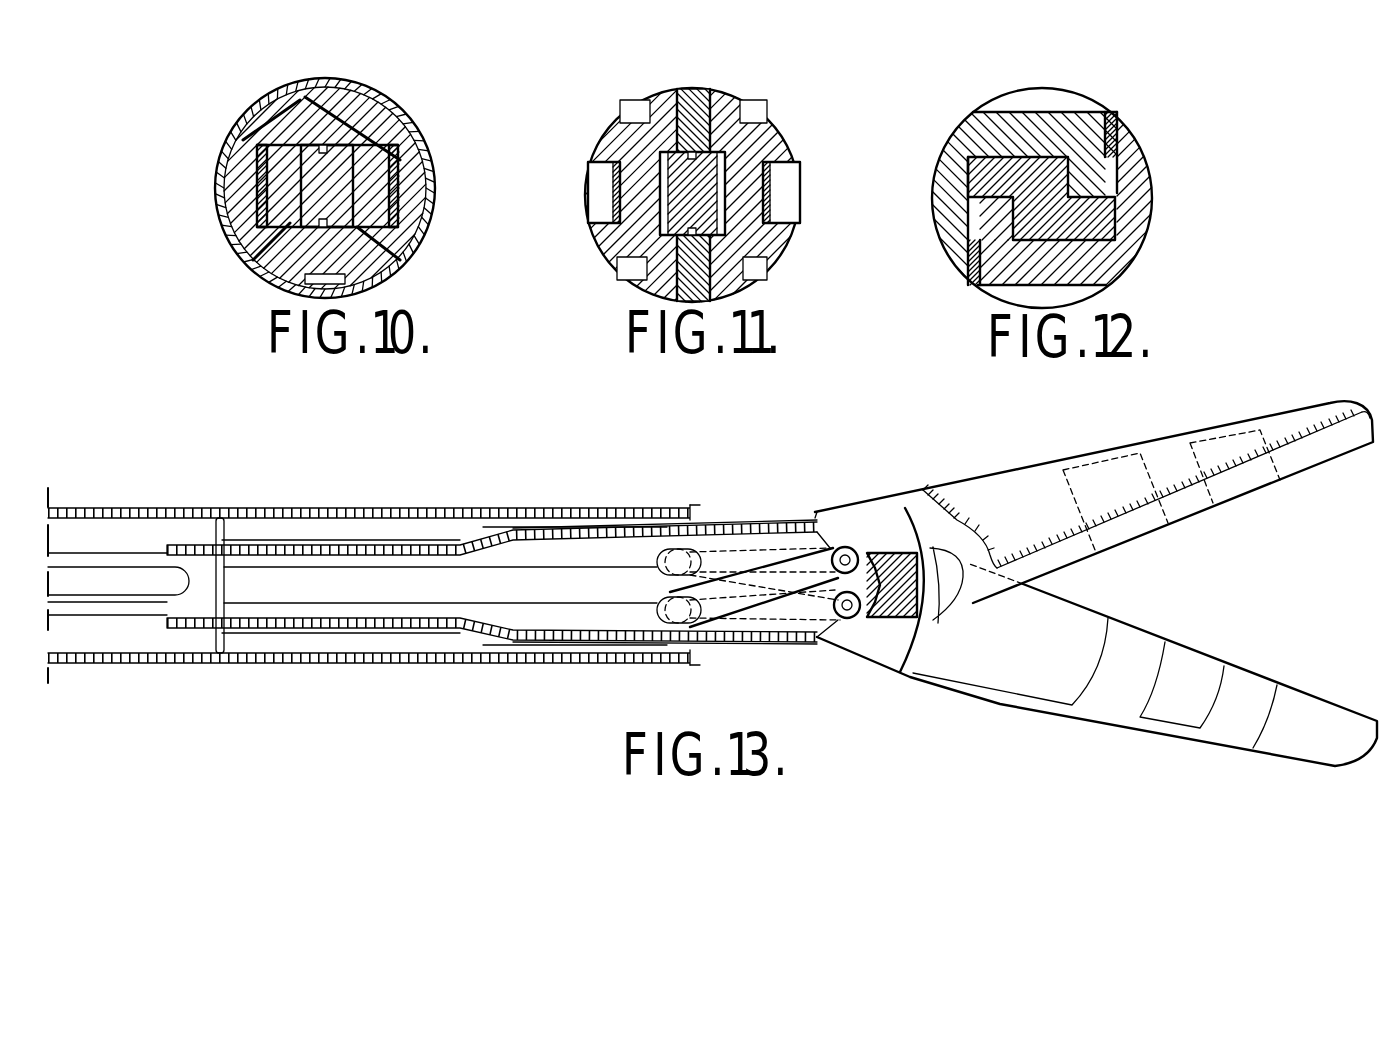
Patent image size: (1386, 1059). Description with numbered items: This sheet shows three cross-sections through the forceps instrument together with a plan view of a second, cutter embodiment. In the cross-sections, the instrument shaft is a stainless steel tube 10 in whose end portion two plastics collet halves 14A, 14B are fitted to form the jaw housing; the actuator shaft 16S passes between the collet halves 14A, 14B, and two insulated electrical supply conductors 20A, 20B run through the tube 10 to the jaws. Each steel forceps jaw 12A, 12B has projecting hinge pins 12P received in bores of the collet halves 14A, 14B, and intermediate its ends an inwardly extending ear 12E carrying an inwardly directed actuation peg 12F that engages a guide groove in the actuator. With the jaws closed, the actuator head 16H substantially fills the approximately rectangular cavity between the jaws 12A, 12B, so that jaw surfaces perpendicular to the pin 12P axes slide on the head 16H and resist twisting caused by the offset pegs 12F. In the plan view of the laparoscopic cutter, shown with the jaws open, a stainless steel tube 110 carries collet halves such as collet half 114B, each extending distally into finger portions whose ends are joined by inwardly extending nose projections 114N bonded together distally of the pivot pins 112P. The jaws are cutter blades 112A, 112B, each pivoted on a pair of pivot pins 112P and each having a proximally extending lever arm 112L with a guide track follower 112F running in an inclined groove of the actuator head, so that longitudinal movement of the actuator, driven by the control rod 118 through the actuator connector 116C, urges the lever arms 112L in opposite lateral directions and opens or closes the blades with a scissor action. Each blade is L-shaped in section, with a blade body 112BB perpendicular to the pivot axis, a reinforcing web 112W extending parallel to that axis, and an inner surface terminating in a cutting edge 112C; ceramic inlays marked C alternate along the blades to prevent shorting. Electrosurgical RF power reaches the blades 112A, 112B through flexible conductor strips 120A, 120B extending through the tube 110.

In FIG. 10, the stainless steel tube 10 is at (436, 128).
In FIG. 10, the collet half 14A is at (388, 100).
In FIG. 11, the collet half 14A is at (706, 88).
In FIG. 12, the collet half 14A is at (1040, 103).
In FIG. 10, the collet half 14B is at (393, 262).
In FIG. 11, the collet half 14B is at (618, 278).
In FIG. 12, the collet half 14B is at (1092, 290).
In FIG. 10, the actuator shaft 16S is at (262, 262).
In FIG. 11, the actuator shaft 16S is at (690, 212).
In FIG. 12, the actuator head 16H is at (1048, 170).
In FIG. 10, the electrical supply conductor 20A is at (403, 213).
In FIG. 11, the electrical supply conductor 20A is at (780, 196).
In FIG. 10, the electrical supply conductor 20B is at (230, 225).
In FIG. 11, the electrical supply conductor 20B is at (612, 192).
In FIG. 11, the hinge pin 12P is at (656, 116).
In FIG. 12, the forceps jaw 12A is at (1140, 176).
In FIG. 12, the forceps jaw 12B is at (948, 180).
In FIG. 12, the ear 12E is at (1112, 126).
In FIG. 12, the actuation peg 12F is at (1087, 187).
In FIG. 13, the stainless steel tube 110 is at (312, 508).
In FIG. 13, the collet half 114B is at (532, 512).
In FIG. 13, the actuator connector 116C is at (208, 560).
In FIG. 13, the control rod 118 is at (130, 585).
In FIG. 13, the flexible conductor strip 120A is at (705, 528).
In FIG. 13, the flexible conductor strip 120B is at (848, 640).
In FIG. 13, the lever arm 112L is at (752, 525).
In FIG. 13, the guide track follower 112F is at (637, 520).
In FIG. 13, the pivot pin 112P is at (845, 555).
In FIG. 13, the nose projection 114N is at (940, 522).
In FIG. 13, the cutter blade 112A is at (1150, 437).
In FIG. 13, the cutter blade 112B is at (1100, 728).
In FIG. 13, the blade body 112BB is at (1038, 478).
In FIG. 13, the cutting edge 112C is at (1280, 478).
In FIG. 13, the reinforcing web 112W is at (1310, 458).